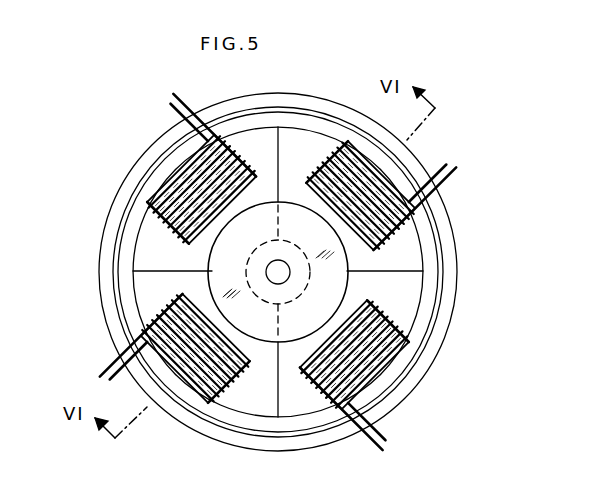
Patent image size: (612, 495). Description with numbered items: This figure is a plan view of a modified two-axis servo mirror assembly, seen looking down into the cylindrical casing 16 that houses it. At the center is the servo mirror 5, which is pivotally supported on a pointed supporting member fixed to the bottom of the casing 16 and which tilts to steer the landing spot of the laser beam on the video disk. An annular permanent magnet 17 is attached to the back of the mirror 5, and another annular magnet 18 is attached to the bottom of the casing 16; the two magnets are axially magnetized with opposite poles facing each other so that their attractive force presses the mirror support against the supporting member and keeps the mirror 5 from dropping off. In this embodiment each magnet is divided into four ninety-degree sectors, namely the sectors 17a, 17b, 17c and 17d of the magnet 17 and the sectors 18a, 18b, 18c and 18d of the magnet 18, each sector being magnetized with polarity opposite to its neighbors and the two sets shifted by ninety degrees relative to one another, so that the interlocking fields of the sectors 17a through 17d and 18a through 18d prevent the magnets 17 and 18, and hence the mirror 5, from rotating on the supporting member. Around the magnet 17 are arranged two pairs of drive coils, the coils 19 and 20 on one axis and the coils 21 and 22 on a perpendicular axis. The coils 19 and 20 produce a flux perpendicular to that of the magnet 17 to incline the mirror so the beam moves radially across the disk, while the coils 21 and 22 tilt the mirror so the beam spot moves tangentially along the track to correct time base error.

The two-axis servo mirror 5 is at (292, 328).
The cylindrical casing 16 is at (328, 437).
The annular permanent magnet 17 is at (273, 204).
The magnetized sector 17a is at (320, 288).
The magnetized sector 17b is at (215, 287).
The magnetized sector 17c is at (233, 247).
The magnetized sector 17d is at (313, 258).
The annular magnet 18 is at (423, 234).
The magnetized sector 18a is at (405, 291).
The magnetized sector 18b is at (250, 403).
The magnetized sector 18c is at (134, 238).
The magnetized sector 18d is at (298, 140).
The drive coil 19 is at (186, 184).
The drive coil 20 is at (396, 378).
The drive coil 21 is at (195, 361).
The drive coil 22 is at (360, 160).